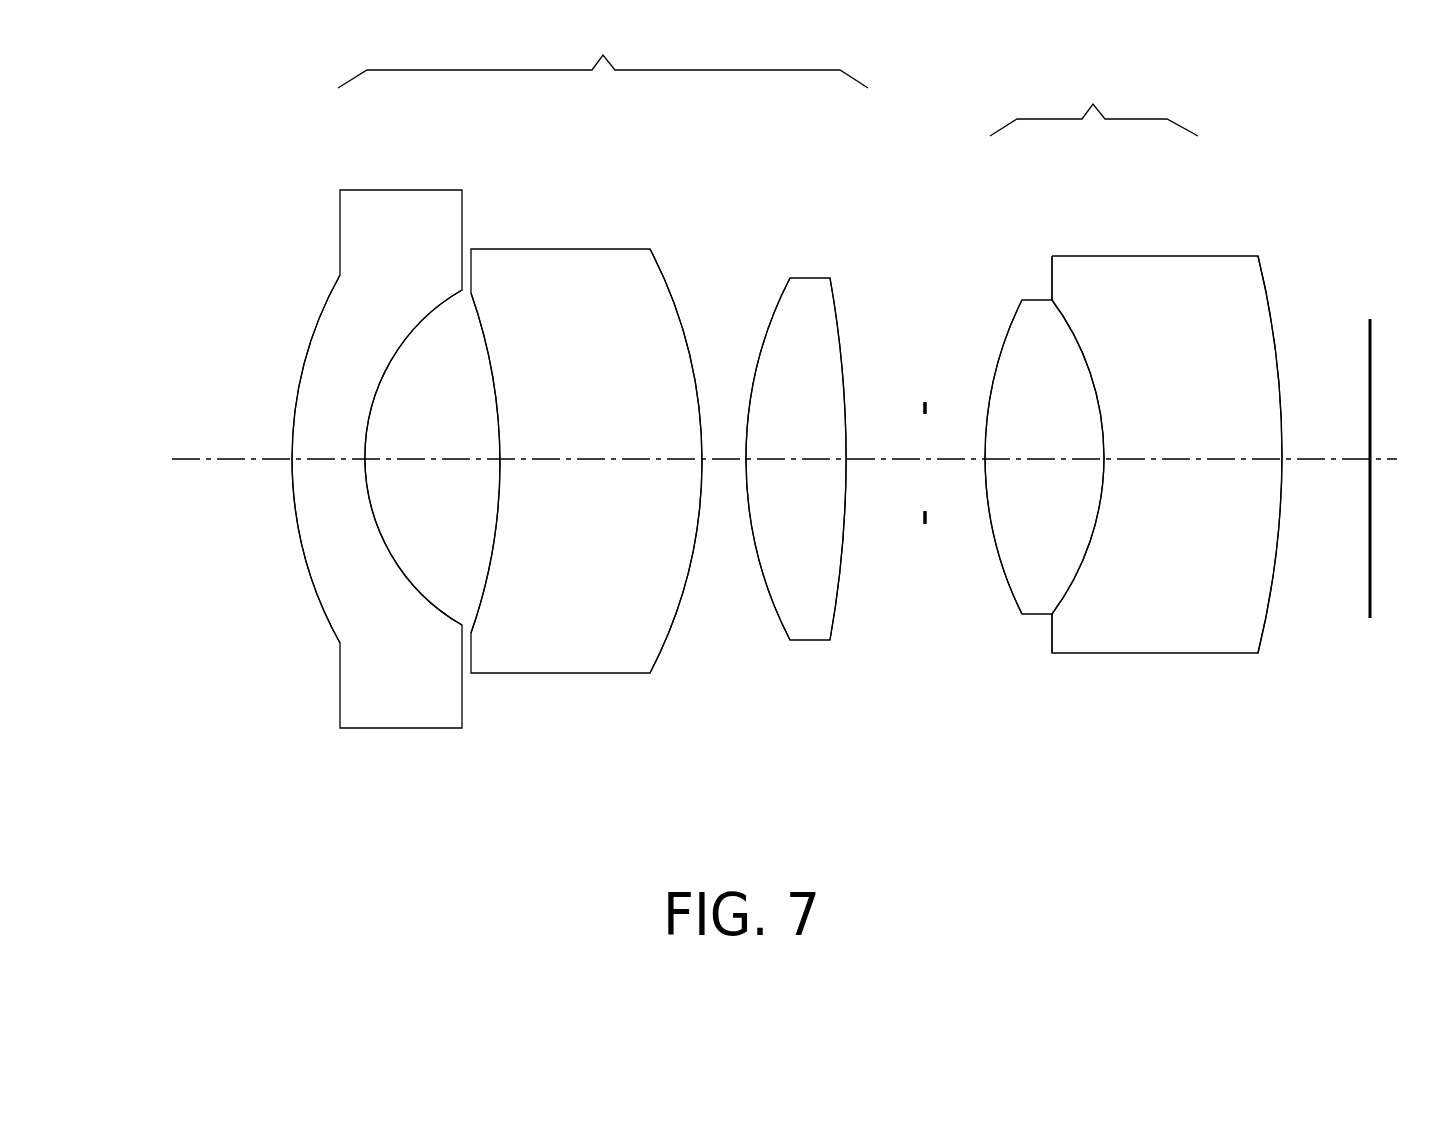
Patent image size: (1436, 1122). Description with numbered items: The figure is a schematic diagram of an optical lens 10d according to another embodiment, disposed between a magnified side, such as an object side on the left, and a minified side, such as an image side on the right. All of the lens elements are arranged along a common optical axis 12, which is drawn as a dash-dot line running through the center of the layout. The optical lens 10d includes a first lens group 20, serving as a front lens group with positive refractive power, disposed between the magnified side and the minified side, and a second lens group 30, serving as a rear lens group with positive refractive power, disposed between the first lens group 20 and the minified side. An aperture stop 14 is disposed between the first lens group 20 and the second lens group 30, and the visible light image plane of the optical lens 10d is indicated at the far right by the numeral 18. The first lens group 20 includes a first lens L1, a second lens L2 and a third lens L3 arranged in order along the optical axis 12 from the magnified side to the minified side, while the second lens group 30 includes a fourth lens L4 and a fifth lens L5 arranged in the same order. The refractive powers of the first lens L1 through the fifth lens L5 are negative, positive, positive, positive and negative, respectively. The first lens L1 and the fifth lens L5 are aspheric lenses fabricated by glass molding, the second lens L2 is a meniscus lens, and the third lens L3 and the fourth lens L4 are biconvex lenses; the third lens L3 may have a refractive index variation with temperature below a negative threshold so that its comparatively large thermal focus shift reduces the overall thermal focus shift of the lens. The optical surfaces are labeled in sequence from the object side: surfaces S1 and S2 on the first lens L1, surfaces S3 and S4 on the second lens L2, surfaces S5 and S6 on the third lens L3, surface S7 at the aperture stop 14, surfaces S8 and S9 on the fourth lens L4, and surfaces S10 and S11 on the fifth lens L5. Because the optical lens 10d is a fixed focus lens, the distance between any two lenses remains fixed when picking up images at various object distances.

The optical lens 10d is at (279, 136).
The optical axis 12 is at (238, 460).
The aperture stop 14 is at (925, 402).
The visible light image plane 18 is at (1370, 572).
The first lens group 20 is at (603, 50).
The second lens group 30 is at (1094, 97).
The first lens L1 is at (383, 190).
The second lens L2 is at (557, 249).
The third lens L3 is at (820, 278).
The fourth lens L4 is at (1035, 300).
The fifth lens L5 is at (1170, 256).
The object-side surface of first lens S1 is at (320, 605).
The image-side surface of first lens S2 is at (424, 605).
The object-side surface of second lens S3 is at (487, 584).
The image-side surface of second lens S4 is at (684, 606).
The object-side surface of third lens S5 is at (765, 583).
The image-side surface of third lens S6 is at (837, 590).
The aperture stop surface S7 is at (925, 524).
The object-side surface of fourth lens S8 is at (1010, 588).
The cemented surface between fourth and fifth lens S9 is at (1050, 607).
The object-side surface of fifth lens S10 is at (1068, 588).
The image-side surface of fifth lens S11 is at (1272, 585).